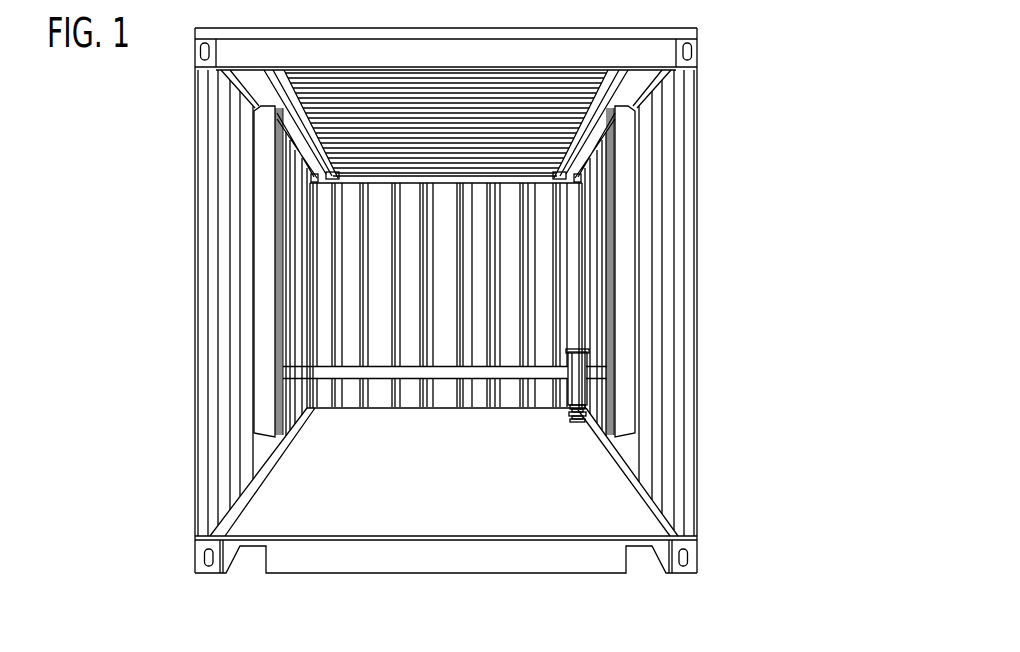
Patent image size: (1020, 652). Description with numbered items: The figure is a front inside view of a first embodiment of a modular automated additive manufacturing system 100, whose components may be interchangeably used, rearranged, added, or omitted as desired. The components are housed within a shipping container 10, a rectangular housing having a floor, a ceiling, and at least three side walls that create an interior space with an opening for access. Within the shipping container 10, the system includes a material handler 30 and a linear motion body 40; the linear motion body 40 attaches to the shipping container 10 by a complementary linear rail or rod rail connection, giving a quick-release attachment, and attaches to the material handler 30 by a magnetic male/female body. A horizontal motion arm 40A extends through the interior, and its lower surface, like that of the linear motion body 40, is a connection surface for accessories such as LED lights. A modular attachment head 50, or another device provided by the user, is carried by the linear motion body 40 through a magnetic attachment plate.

The modular automated additive manufacturing system 100 is at (747, 39).
The shipping container 10 is at (699, 297).
The material handler 30 is at (632, 86).
The linear motion body 40 is at (262, 193).
The horizontal motion arm 40A is at (376, 372).
The modular attachment head 50 is at (577, 388).